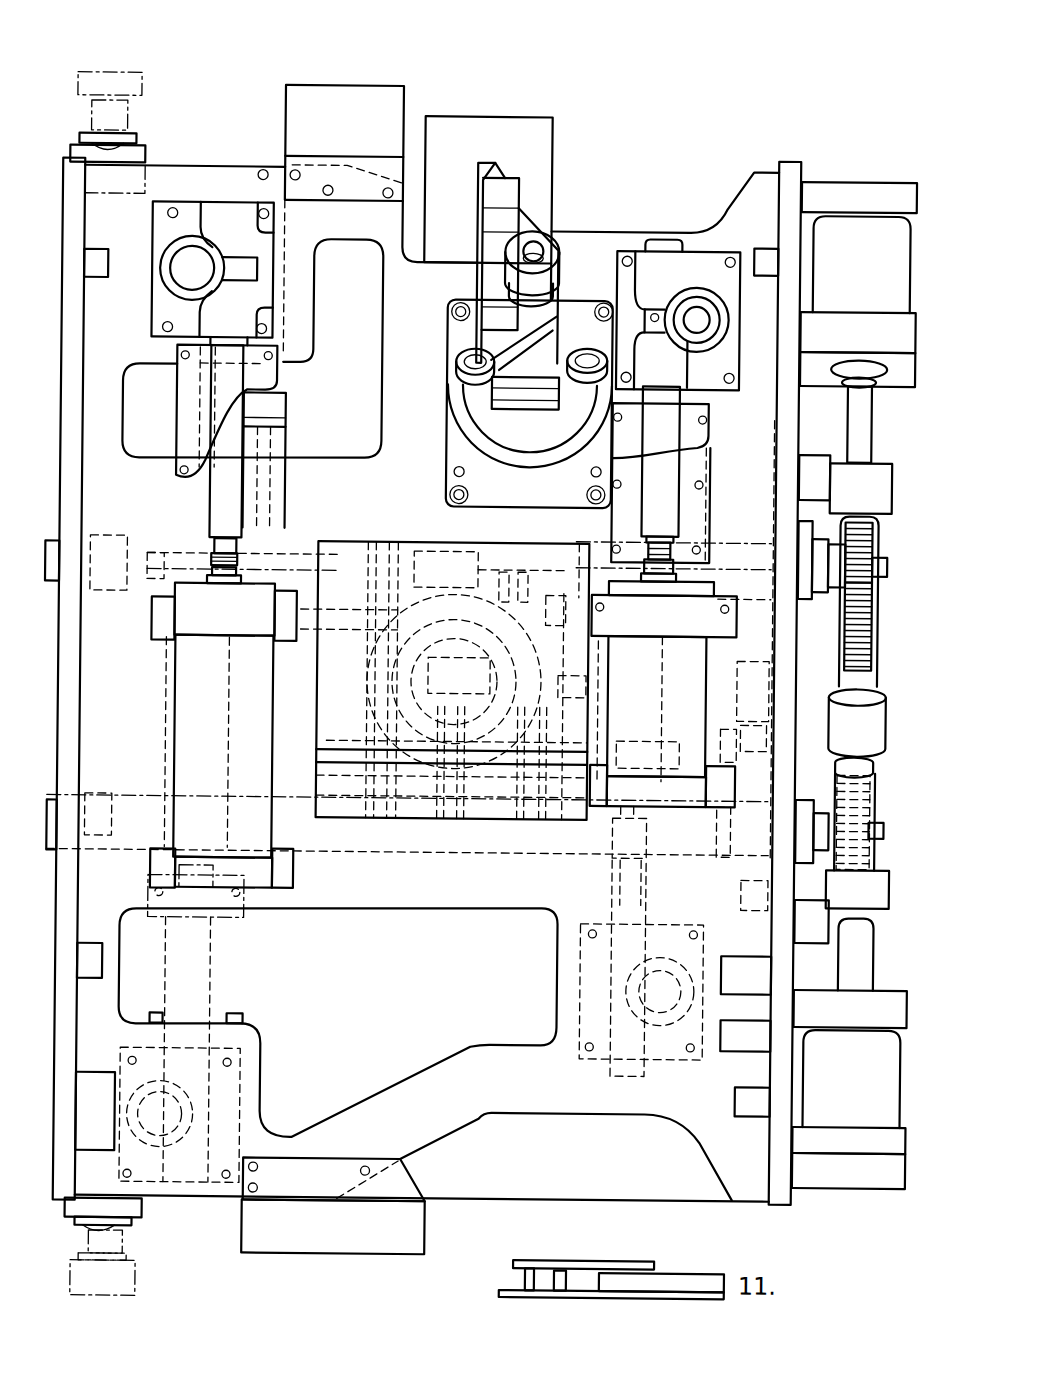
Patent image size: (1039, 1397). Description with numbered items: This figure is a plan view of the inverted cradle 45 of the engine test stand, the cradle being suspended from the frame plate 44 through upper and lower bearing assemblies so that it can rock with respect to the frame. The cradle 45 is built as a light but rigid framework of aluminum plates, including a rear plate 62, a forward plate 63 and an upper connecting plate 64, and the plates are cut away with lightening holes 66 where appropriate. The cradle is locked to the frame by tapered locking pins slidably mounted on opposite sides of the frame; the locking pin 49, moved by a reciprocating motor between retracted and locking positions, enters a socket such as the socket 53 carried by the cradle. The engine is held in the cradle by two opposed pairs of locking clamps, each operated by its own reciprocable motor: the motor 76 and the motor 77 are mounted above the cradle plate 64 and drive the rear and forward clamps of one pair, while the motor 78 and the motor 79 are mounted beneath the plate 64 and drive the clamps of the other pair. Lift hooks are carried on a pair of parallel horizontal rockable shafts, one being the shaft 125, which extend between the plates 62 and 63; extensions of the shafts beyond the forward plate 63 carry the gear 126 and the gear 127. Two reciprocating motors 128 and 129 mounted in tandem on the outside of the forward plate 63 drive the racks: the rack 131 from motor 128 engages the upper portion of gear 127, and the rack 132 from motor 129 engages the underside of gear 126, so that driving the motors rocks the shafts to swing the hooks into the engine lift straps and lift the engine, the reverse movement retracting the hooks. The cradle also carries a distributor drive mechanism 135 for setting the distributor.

The plate 44 is at (340, 553).
The cradle 45 is at (484, 1124).
The tapered locking pin 49 is at (134, 112).
The socket 53 is at (137, 141).
The rear plate 62 is at (68, 492).
The forward plate 63 is at (785, 1203).
The upper connecting plate 64 is at (737, 220).
The lightening holes 66 is at (310, 322).
The reciprocable motor 76 is at (193, 738).
The motor 77 is at (698, 694).
The motor 78 is at (167, 702).
The motor 79 is at (661, 666).
The rotatable shaft 125 is at (733, 547).
The gear 126 is at (896, 536).
The gear 127 is at (860, 808).
The reciprocating motor 128 is at (878, 1099).
The reciprocating motor 129 is at (882, 281).
The rack 131 is at (876, 772).
The rack 132 is at (870, 626).
The distributor drive mechanism 135 is at (549, 261).